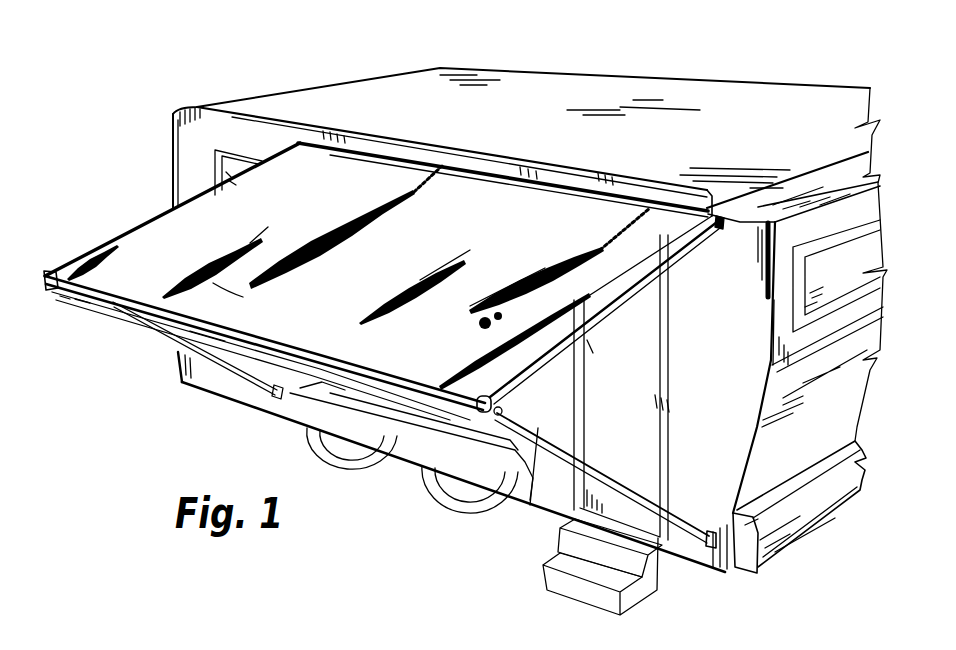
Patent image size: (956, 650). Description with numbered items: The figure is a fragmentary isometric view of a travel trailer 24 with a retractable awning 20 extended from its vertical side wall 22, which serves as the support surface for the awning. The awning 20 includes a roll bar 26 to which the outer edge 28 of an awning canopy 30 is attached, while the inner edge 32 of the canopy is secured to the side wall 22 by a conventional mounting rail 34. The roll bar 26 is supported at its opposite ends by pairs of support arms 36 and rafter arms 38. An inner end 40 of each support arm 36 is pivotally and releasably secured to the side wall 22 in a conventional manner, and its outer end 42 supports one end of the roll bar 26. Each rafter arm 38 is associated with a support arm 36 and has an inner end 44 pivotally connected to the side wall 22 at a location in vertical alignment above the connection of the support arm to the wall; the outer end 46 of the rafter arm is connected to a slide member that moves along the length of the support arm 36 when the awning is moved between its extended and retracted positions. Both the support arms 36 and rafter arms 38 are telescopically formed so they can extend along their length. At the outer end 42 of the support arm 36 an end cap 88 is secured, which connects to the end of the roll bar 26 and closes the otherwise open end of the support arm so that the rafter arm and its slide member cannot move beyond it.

The retractable awning 20 is at (128, 212).
The side wall 22 is at (250, 137).
The travel trailer 24 is at (335, 85).
The roll bar 26 is at (481, 412).
The outer edge 28 is at (150, 277).
The awning canopy 30 is at (200, 268).
The inner edge 32 is at (527, 180).
The mounting rail 34 is at (660, 188).
The support arm 36 is at (202, 360).
The rafter arm 38 is at (598, 337).
The inner end of support arm 40 is at (709, 546).
The outer end of support arm 42 is at (505, 417).
The inner end of rafter arm 44 is at (719, 230).
The outer end of rafter arm 46 is at (501, 412).
The end cap 88 is at (483, 372).